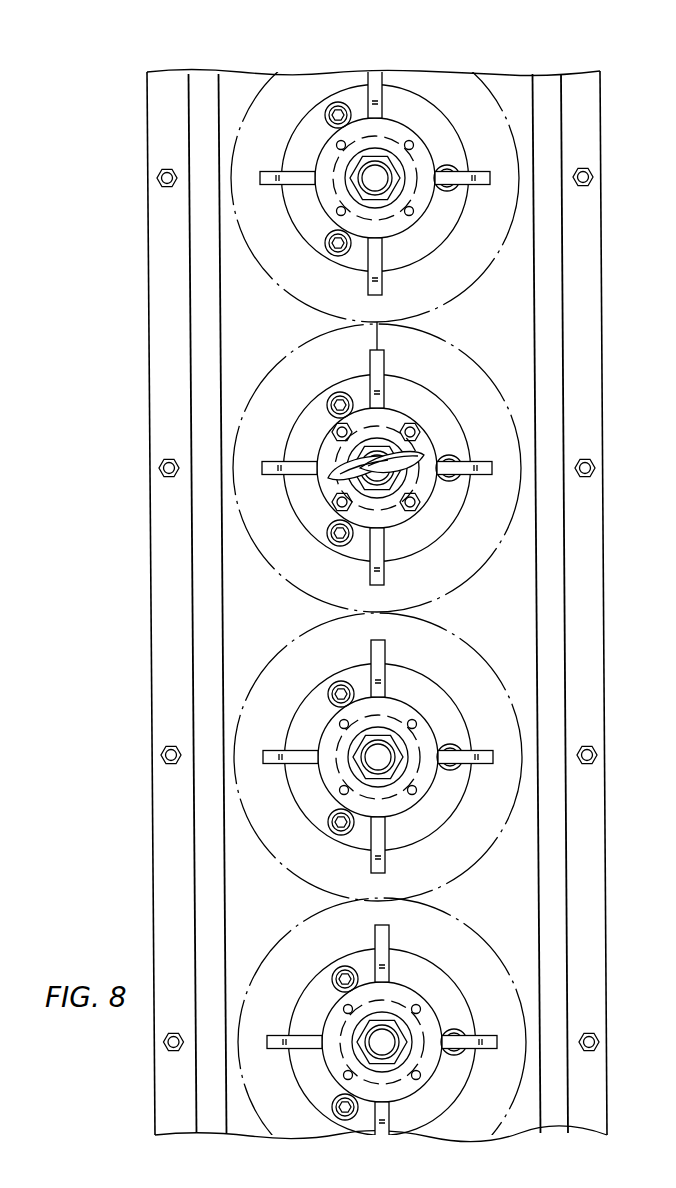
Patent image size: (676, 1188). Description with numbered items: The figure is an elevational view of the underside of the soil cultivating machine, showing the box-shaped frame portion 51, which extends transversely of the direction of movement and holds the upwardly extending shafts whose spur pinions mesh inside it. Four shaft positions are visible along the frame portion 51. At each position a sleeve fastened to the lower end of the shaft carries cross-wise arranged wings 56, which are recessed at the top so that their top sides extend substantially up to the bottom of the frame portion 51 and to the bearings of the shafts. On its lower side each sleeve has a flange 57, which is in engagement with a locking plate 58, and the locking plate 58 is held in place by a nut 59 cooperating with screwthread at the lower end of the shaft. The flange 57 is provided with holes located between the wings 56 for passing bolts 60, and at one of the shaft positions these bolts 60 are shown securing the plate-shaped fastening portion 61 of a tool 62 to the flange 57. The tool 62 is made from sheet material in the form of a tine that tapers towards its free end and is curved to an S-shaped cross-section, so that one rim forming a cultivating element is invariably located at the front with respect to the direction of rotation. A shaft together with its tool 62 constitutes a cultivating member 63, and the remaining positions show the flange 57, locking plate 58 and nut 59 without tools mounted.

The box-shaped frame portion 51 is at (196, 369).
The wings 56 is at (268, 172).
The flange 57 is at (416, 136).
The locking plate 58 is at (403, 213).
The nut 59 is at (385, 182).
The bolts 60 is at (414, 428).
The plate-shaped fastening portion 61 is at (397, 408).
The tool 62 is at (334, 490).
The cultivating member 63 is at (438, 448).